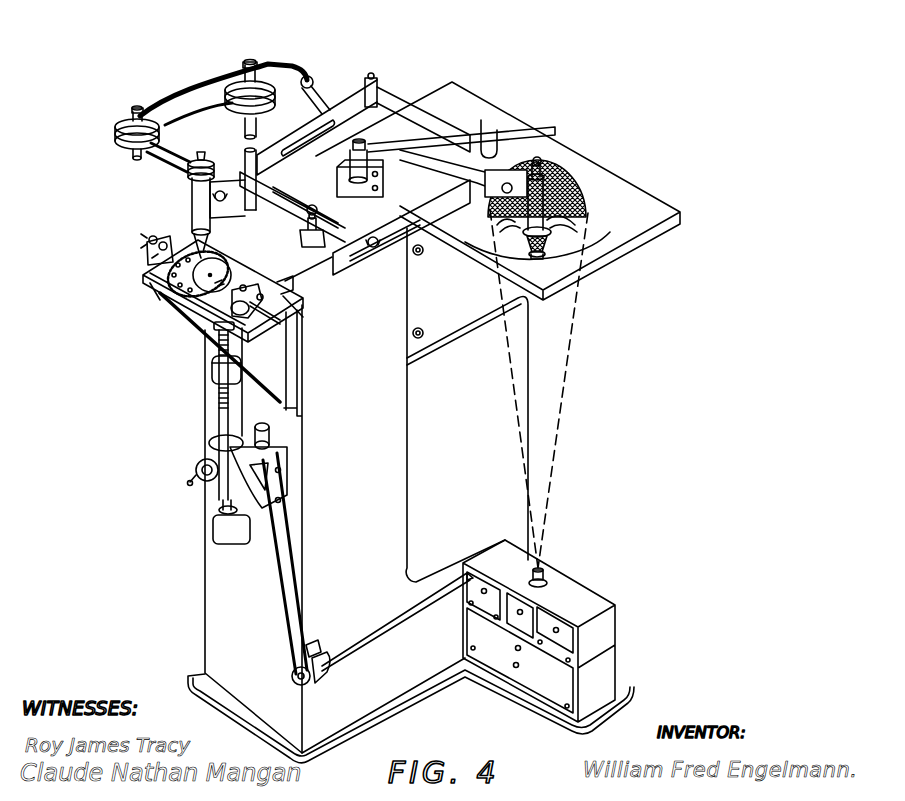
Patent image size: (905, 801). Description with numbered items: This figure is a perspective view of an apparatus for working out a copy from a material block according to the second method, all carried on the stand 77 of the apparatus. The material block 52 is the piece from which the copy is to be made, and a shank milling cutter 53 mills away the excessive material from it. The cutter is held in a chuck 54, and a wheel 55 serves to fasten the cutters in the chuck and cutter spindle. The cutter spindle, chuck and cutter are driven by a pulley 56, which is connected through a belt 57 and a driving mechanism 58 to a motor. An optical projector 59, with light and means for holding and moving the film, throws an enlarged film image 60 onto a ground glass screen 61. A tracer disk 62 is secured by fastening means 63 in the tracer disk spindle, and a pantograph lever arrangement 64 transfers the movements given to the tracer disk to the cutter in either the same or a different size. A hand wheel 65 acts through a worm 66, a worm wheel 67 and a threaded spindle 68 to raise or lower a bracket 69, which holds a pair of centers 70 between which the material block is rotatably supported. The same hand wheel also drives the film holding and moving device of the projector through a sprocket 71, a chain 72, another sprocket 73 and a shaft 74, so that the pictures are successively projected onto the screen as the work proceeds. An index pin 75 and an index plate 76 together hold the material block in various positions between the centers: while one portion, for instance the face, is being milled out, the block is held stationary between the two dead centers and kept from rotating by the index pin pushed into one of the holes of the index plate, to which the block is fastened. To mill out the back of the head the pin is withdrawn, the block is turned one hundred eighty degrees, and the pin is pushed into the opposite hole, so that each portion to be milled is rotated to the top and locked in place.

The material block 52 is at (160, 296).
The shank milling cutter 53 is at (195, 262).
The chuck 54 is at (195, 250).
The wheel 55 is at (190, 168).
The pulley 56 is at (187, 176).
The belt 57 is at (197, 166).
The driving mechanism 58 is at (230, 71).
The optical projector 59 is at (558, 573).
The enlarged film image 60 is at (578, 187).
The ground glass screen 61 is at (633, 209).
The tracer disk 62 is at (556, 258).
The tracer disk fastening means 63 is at (547, 160).
The pantograph lever arrangement 64 is at (398, 102).
The hand wheel 65 is at (203, 473).
The worm 66 is at (188, 482).
The worm wheel 67 is at (205, 436).
The threaded spindle 68 is at (215, 397).
The bracket 69 is at (166, 319).
The pair of centers 70 is at (157, 265).
The sprocket 71 is at (255, 428).
The chain 72 is at (270, 553).
The sprocket 73 is at (288, 672).
The shaft 74 is at (362, 630).
The index pin 75 is at (178, 228).
The index plate 76 is at (153, 277).
The stand 77 is at (530, 477).